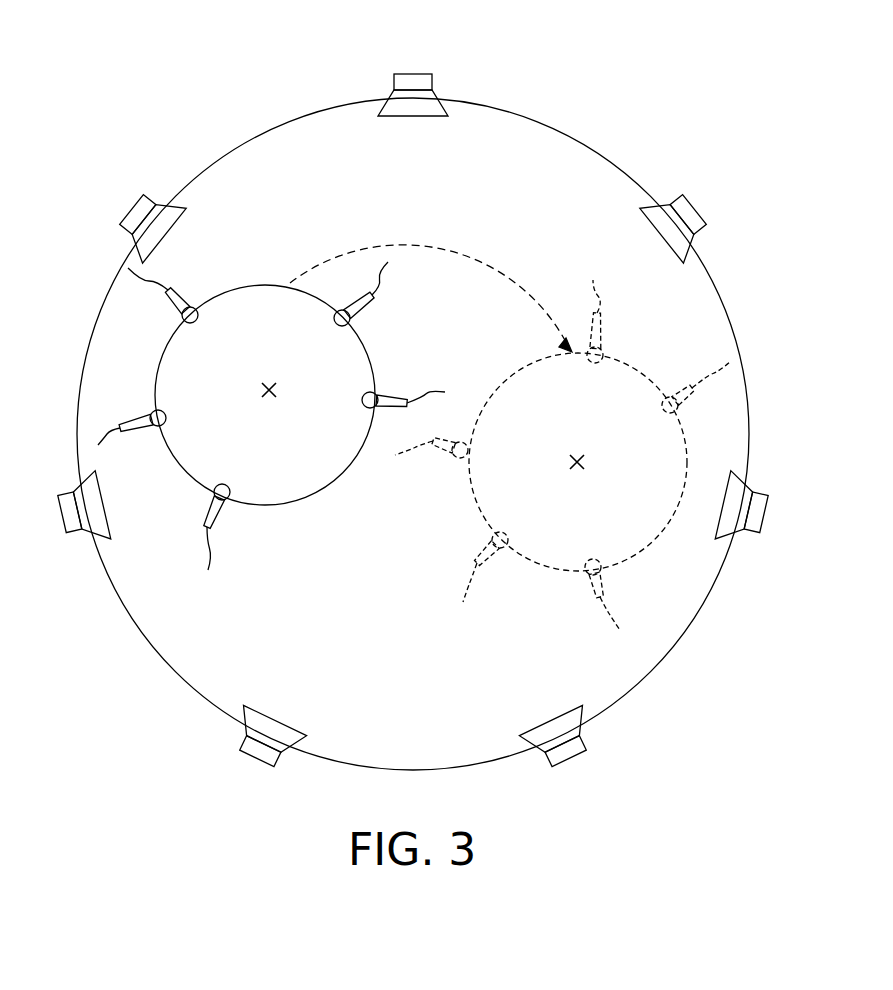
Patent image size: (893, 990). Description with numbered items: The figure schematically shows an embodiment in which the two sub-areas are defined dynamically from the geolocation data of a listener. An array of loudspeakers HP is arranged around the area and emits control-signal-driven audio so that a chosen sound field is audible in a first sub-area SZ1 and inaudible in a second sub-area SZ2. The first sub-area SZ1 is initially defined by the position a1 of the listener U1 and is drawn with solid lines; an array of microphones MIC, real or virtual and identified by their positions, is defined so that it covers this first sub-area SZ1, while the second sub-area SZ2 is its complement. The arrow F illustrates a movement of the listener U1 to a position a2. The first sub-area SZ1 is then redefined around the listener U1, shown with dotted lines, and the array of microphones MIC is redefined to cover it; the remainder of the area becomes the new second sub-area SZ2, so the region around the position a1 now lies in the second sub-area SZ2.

The loudspeaker HP is at (408, 74).
The microphone MIC is at (186, 306).
The arrow F is at (431, 291).
The listener U1 is at (403, 406).
The first sub-area SZ1 is at (305, 449).
The second sub-area SZ2 is at (378, 517).
The position a1 is at (295, 392).
The position a2 is at (603, 463).